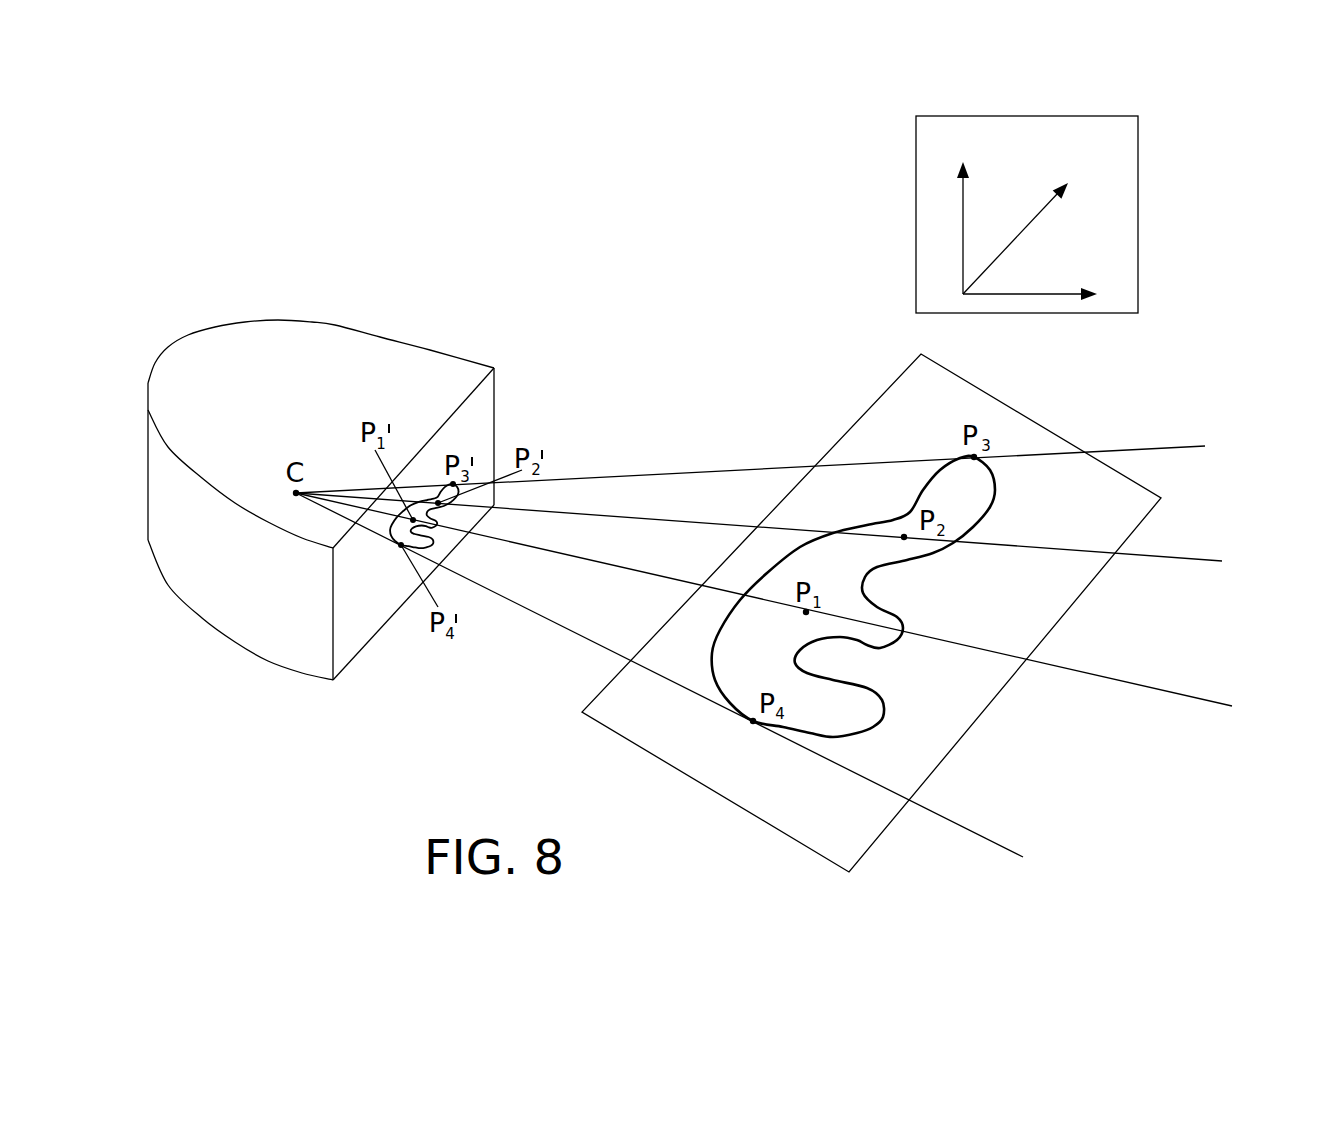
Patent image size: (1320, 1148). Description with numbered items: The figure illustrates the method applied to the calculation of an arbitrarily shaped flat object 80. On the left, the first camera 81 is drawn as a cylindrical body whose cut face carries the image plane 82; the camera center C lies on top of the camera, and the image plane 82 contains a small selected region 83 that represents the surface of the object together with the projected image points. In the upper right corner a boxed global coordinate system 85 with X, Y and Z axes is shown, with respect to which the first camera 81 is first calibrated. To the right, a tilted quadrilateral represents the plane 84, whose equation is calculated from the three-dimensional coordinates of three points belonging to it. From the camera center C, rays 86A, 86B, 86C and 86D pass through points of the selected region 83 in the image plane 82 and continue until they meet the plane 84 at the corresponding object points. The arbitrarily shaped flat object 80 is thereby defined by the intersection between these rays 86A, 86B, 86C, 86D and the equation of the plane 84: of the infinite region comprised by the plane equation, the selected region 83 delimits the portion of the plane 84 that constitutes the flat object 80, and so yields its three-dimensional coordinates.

The arbitrarily shaped flat object 80 is at (883, 718).
The first camera 81 is at (378, 332).
The image plane 82 is at (482, 412).
The region 83 is at (417, 509).
The plane 84 is at (913, 415).
The global coordinate system 85 is at (916, 170).
The ray 86A is at (605, 475).
The ray 86B is at (635, 516).
The ray 86C is at (640, 573).
The ray 86D is at (557, 623).